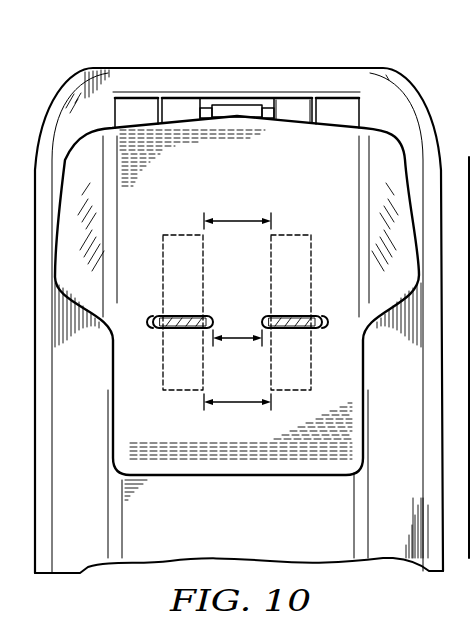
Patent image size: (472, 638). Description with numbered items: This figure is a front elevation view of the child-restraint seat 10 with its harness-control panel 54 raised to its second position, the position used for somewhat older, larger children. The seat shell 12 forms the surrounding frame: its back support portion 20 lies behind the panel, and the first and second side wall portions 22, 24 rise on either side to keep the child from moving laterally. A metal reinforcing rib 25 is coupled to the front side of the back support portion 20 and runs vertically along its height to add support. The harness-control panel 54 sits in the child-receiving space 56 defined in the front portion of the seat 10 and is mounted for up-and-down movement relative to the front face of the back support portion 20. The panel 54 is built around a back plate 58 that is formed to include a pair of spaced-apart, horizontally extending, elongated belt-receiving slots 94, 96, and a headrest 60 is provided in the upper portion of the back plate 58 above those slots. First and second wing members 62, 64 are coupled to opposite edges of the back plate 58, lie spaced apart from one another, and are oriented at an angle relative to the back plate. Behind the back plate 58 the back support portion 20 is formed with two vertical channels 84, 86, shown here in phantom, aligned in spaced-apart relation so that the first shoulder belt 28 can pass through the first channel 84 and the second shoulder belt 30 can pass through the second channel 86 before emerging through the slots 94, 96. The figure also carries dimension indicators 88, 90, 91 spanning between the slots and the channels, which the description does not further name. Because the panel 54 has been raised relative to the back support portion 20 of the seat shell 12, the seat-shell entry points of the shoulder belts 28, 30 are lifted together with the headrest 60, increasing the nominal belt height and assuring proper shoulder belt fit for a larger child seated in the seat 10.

The child-restraint seat 10 is at (250, 322).
The seat shell 12 is at (393, 63).
The back support portion 20 is at (254, 75).
The first side wall portion 22 is at (393, 543).
The second side wall portion 24 is at (78, 548).
The metal reinforcing rib 25 is at (227, 110).
The first shoulder belt 28 is at (282, 329).
The second shoulder belt 30 is at (180, 329).
The harness-control panel 54 is at (292, 113).
The child-receiving space 56 is at (189, 148).
The back plate 58 is at (271, 462).
The headrest 60 is at (333, 145).
The first wing member 62 is at (388, 153).
The second wing member 64 is at (88, 155).
The first vertical channel 84 is at (308, 253).
The second vertical channel 86 is at (168, 253).
The outer slot spacing 88 is at (235, 398).
The upper spacing 90 is at (241, 218).
The inner slot spacing 91 is at (238, 336).
The first belt-receiving slot 94 is at (316, 320).
The second belt-receiving slot 96 is at (157, 320).